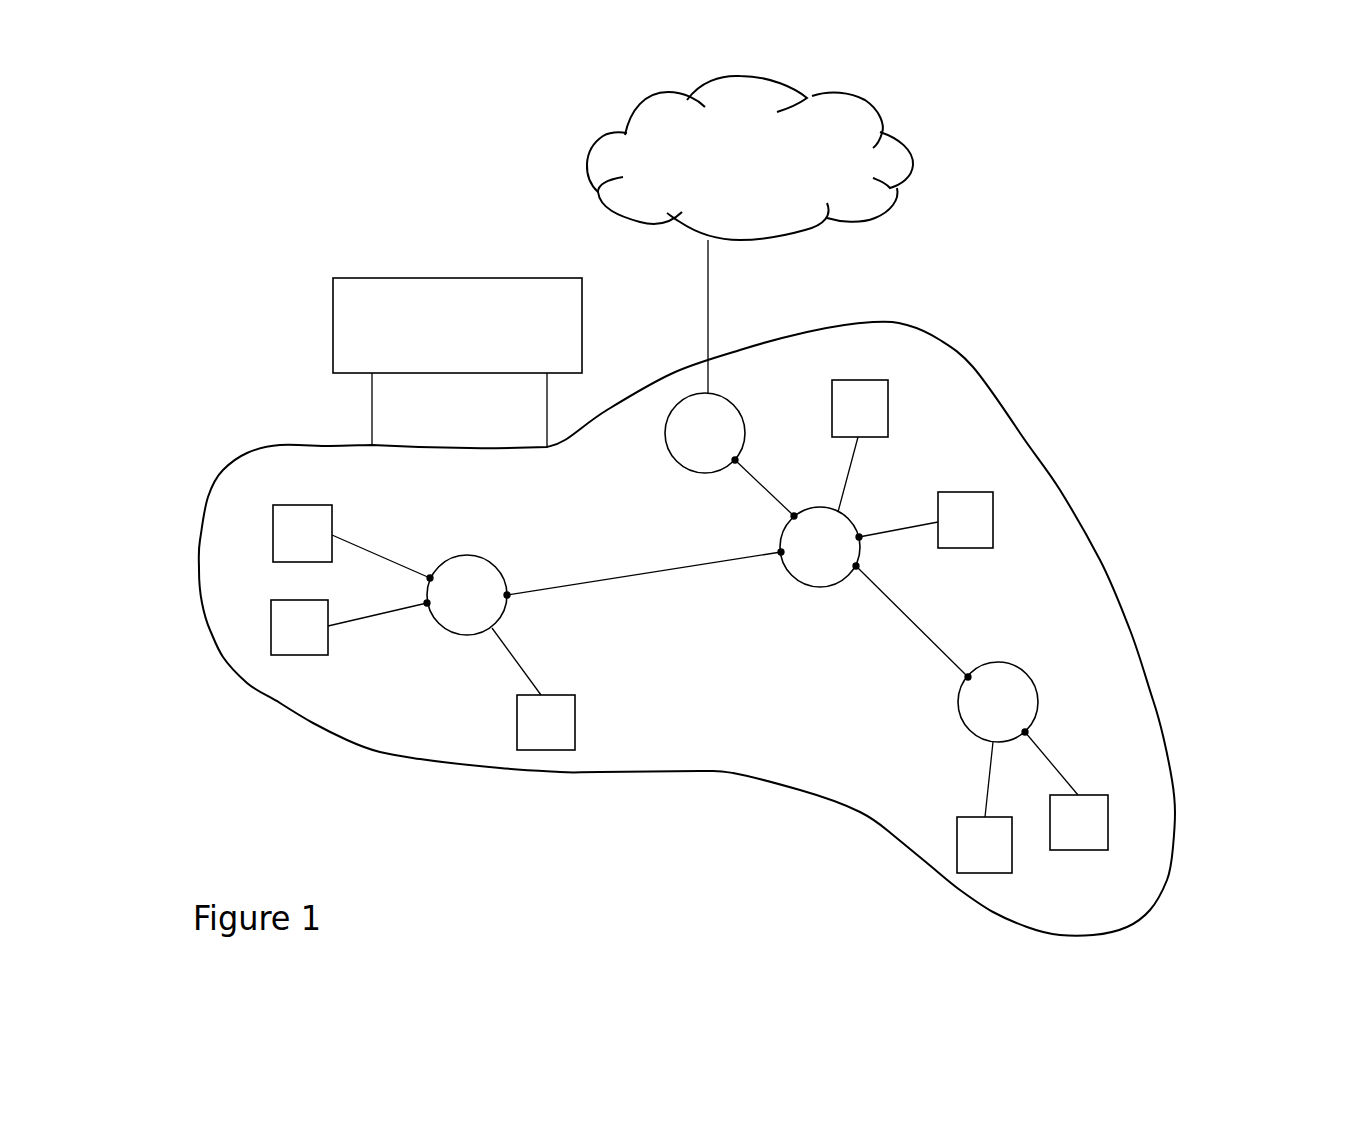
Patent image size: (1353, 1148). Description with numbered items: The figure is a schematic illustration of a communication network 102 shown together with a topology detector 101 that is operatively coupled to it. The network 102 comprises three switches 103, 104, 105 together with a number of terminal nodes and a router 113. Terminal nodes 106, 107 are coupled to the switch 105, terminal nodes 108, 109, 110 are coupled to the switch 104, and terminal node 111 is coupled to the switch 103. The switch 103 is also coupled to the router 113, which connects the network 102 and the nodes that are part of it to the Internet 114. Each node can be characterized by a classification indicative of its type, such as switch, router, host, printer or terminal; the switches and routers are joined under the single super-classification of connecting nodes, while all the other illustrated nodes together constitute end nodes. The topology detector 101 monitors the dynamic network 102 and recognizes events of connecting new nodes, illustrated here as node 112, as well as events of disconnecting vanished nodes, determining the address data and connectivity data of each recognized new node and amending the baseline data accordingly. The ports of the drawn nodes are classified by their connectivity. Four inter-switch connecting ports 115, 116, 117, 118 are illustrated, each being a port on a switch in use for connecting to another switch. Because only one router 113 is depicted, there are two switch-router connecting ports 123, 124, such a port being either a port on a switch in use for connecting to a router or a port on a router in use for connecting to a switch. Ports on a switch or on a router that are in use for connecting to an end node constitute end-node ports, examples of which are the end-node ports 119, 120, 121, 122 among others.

The topology detector 101 is at (455, 278).
The communication network 102 is at (968, 368).
The switch 103 is at (815, 590).
The switch 104 is at (467, 635).
The switch 105 is at (1035, 680).
The terminal node 106 is at (1108, 822).
The terminal node 107 is at (957, 847).
The terminal node 108 is at (273, 527).
The terminal node 109 is at (575, 718).
The terminal node 110 is at (271, 627).
The terminal node 111 is at (862, 380).
The new node 112 is at (993, 518).
The router 113 is at (675, 457).
The Internet 114 is at (848, 132).
The inter-switch connecting port 115 is at (781, 552).
The inter-switch connecting port 116 is at (507, 590).
The inter-switch connecting port 117 is at (856, 566).
The inter-switch connecting port 118 is at (968, 677).
The end-node port 119 is at (430, 578).
The end-node port 120 is at (427, 603).
The end-node port 121 is at (1025, 732).
The end-node port 122 is at (859, 537).
The switch-router connecting port 123 is at (794, 516).
The switch-router connecting port 124 is at (738, 458).